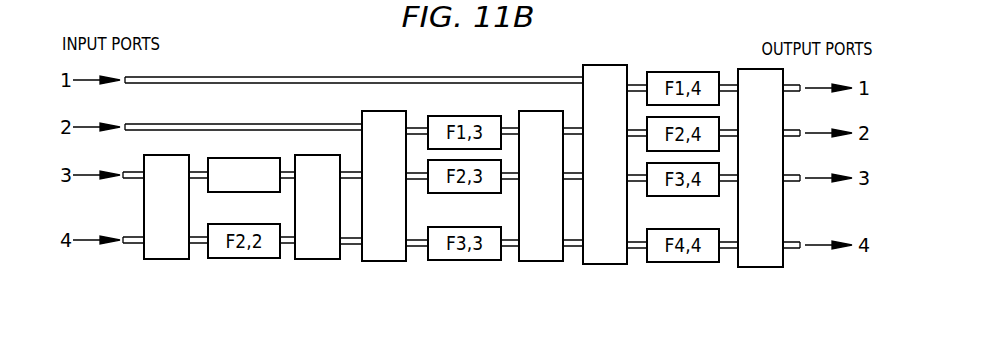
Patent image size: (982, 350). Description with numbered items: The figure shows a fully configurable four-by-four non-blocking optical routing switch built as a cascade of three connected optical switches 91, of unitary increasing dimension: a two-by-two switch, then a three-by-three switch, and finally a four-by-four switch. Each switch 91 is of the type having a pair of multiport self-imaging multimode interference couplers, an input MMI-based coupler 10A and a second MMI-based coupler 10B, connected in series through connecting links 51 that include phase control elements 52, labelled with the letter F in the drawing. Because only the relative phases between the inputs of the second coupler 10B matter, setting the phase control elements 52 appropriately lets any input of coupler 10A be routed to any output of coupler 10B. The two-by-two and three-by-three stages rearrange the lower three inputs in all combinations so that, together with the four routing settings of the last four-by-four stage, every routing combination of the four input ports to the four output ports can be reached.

The MMI-based coupler 10A is at (153, 216).
The MMI-based coupler 10B is at (304, 216).
The connecting link 51 is at (202, 168).
The phase control element 52 is at (246, 158).
The optical switch 91 is at (160, 278).